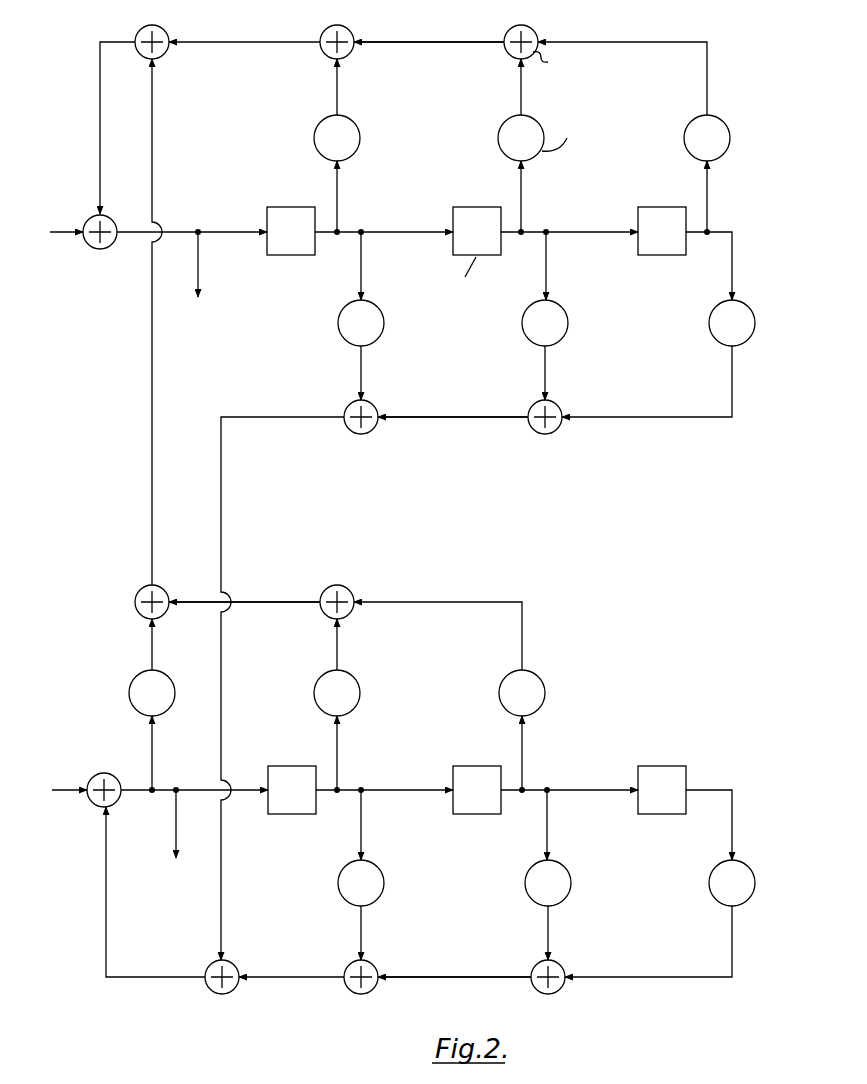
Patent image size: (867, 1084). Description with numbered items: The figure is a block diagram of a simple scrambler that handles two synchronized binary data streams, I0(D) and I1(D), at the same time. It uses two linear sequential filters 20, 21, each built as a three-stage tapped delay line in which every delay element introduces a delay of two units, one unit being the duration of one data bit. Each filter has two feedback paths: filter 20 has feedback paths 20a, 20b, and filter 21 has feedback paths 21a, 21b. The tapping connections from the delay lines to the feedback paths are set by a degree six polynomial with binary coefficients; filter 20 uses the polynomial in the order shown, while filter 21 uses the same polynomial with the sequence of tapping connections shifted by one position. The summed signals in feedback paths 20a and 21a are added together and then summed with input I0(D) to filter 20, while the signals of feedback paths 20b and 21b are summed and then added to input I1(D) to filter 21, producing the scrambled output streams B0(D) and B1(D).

The linear sequential filter 20 is at (737, 225).
The feedback path 20a is at (405, 40).
The feedback path 20b is at (468, 418).
The linear sequential filter 21 is at (738, 778).
The feedback path 21a is at (412, 603).
The feedback path 21b is at (483, 979).